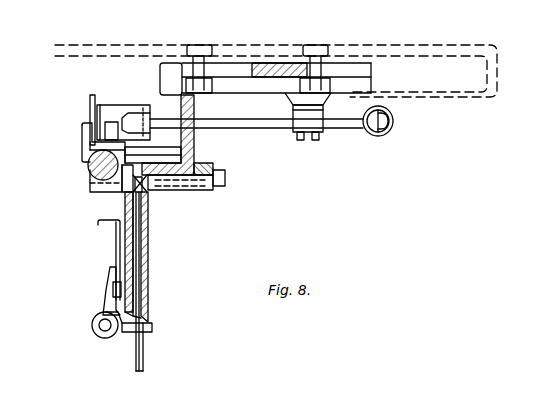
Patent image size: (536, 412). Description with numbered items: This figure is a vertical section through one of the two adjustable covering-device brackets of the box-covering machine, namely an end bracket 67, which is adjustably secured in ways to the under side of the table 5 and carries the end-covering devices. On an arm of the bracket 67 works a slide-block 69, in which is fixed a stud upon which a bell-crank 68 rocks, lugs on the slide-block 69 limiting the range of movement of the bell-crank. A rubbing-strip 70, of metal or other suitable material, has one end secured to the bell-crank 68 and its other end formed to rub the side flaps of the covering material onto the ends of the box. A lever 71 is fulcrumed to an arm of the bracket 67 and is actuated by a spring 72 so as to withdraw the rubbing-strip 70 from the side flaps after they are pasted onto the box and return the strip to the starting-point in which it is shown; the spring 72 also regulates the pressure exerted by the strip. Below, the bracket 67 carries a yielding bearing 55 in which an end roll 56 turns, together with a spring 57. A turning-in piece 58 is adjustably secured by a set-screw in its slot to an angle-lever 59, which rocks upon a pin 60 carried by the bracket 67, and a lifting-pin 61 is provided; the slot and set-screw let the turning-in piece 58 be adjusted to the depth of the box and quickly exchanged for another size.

The frame 5 is at (438, 44).
The yielding bearing 55 is at (121, 178).
The end roll 56 is at (92, 172).
The spring 57 is at (143, 183).
The turning-in piece 58 is at (115, 235).
The angle-lever 59 is at (105, 288).
The pin 60 is at (99, 331).
The lifting-pin 61 is at (144, 345).
The end bracket 67 is at (196, 142).
The bell-crank 68 is at (138, 98).
The slide-block 69 is at (86, 147).
The rubbing-strip 70 is at (89, 102).
The lever 71 is at (253, 122).
The spring 72 is at (393, 118).